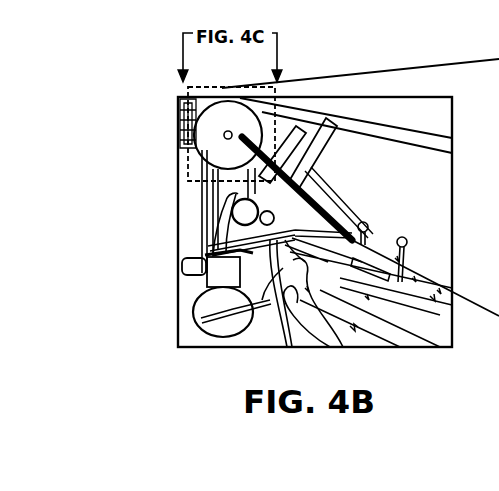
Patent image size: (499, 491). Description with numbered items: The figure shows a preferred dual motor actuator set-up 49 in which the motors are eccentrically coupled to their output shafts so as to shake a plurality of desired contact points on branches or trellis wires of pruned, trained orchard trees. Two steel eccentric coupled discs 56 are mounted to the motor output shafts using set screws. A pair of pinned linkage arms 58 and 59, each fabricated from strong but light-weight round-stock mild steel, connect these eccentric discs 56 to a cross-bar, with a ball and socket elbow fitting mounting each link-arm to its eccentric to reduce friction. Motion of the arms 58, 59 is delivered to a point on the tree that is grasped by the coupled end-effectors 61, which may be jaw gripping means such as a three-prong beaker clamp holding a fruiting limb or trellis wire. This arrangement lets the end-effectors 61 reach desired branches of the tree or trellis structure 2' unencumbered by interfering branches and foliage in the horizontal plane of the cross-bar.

The feeder assembly 49 is at (155, 60).
The eccentric coupled discs 56 is at (213, 137).
The pinned linkage arm 58 is at (317, 185).
The pinned linkage arm 59 is at (267, 302).
The end-effector 61 is at (408, 252).
The conveyor section 2' is at (432, 332).